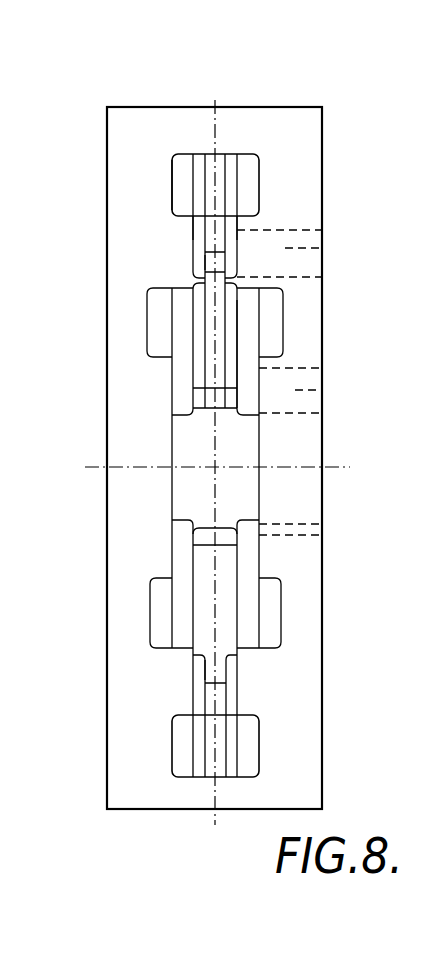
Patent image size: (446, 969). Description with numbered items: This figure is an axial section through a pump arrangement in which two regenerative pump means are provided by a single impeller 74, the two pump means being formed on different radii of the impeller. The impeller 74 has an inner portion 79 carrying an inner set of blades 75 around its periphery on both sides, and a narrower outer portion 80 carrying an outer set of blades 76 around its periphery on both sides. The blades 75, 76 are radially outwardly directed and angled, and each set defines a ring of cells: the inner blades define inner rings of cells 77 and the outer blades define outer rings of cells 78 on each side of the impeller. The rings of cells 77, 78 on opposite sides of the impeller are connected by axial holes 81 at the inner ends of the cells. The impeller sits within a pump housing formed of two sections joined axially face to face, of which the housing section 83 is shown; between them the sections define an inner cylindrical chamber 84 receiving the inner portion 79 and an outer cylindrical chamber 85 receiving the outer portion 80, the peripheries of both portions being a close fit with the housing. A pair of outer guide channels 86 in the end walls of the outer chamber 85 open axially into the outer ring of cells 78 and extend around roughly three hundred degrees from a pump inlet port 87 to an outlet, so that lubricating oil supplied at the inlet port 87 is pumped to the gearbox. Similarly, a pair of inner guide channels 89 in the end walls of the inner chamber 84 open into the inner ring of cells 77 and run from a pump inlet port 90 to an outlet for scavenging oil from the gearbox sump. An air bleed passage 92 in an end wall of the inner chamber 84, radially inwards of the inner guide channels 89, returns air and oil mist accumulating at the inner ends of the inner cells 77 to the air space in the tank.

The impeller 74 is at (232, 162).
The inner set of blades 75 is at (182, 366).
The outer set of blades 76 is at (230, 195).
The inner ring of cells 77 is at (240, 368).
The outer ring of cells 78 is at (233, 223).
The inner portion 79 is at (172, 433).
The outer portion 80 is at (190, 230).
The axial holes 81 is at (210, 260).
The housing section 83 is at (297, 120).
The inner cylindrical chamber 84 is at (173, 122).
The outer cylindrical chamber 85 is at (173, 167).
The outer guide channels 86 is at (187, 735).
The pump inlet port 87 is at (322, 248).
The inner guide channels 89 is at (160, 618).
The pump inlet port 90 is at (322, 392).
The passage 92 is at (325, 532).